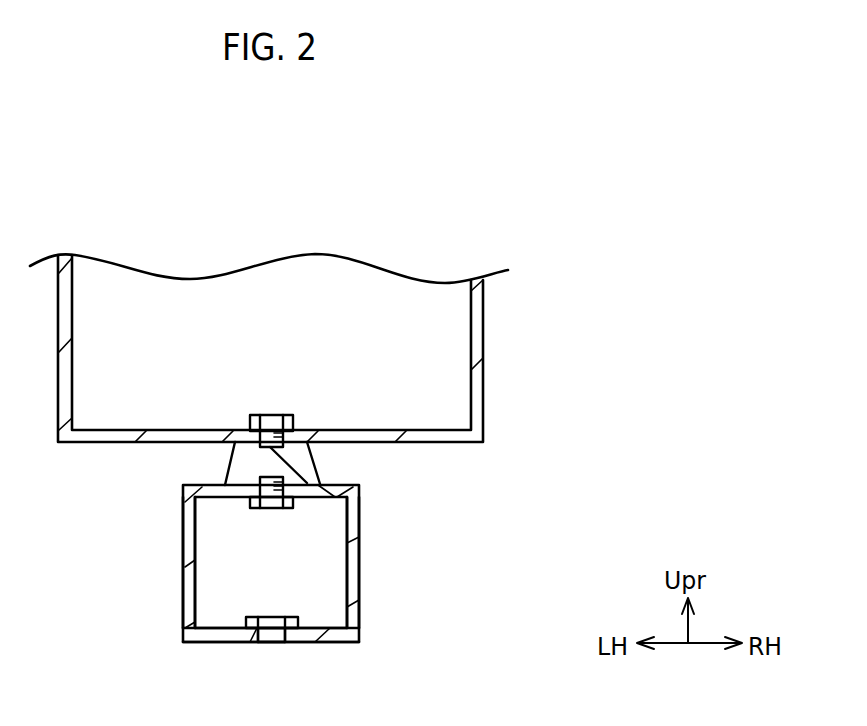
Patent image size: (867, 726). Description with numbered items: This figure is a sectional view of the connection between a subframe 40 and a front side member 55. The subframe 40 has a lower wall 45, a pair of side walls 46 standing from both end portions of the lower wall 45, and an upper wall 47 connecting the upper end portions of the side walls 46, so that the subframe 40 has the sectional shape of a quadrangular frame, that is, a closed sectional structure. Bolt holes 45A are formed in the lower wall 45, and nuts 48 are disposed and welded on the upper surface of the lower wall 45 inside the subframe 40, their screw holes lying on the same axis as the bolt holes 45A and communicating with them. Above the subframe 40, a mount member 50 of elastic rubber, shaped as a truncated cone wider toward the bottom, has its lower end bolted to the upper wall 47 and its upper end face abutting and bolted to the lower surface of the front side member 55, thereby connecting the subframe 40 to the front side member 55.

The front side member 55 is at (516, 346).
The mount member 50 is at (228, 457).
The upper wall 47 is at (337, 479).
The subframe 40 is at (433, 551).
The side walls 46 is at (183, 597).
The lower wall 45 is at (332, 643).
The bolt holes 45A is at (270, 638).
The nuts 48 is at (247, 622).